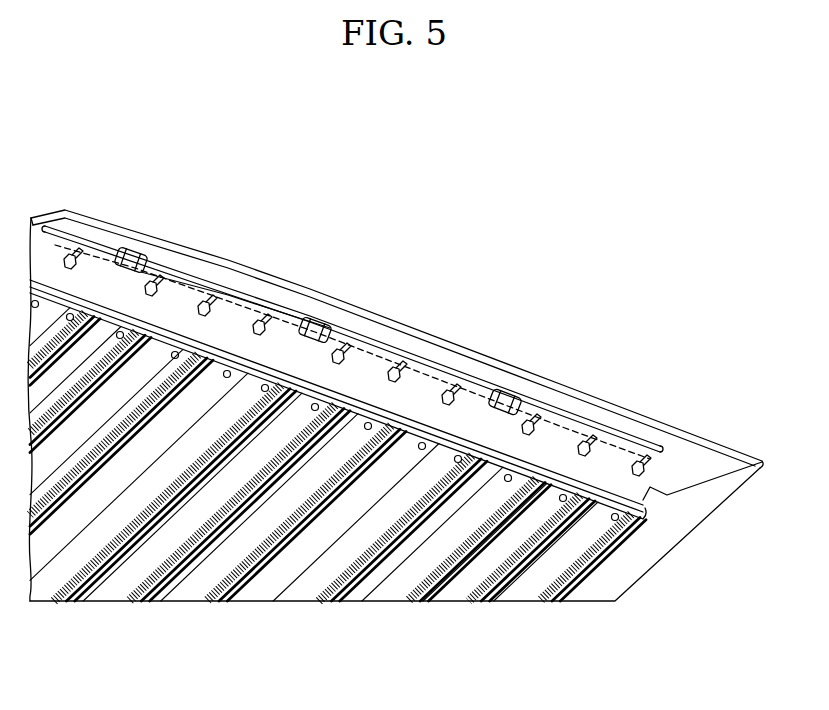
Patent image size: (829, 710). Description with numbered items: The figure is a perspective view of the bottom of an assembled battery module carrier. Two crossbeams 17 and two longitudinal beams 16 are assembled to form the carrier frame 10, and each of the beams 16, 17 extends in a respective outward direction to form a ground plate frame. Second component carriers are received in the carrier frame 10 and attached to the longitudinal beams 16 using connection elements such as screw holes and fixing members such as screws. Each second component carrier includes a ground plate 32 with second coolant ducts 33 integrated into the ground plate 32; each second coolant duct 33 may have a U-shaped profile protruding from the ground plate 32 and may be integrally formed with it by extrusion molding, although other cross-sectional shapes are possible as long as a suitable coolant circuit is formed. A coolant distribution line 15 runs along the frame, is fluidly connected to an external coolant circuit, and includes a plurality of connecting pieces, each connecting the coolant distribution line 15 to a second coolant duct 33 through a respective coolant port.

The carrier frame 10 is at (375, 306).
The coolant distribution line 15 is at (576, 418).
The longitudinal beam 16 is at (697, 457).
The crossbeam 17 is at (672, 520).
The ground plate 32 is at (184, 600).
The second coolant duct 33 is at (242, 600).